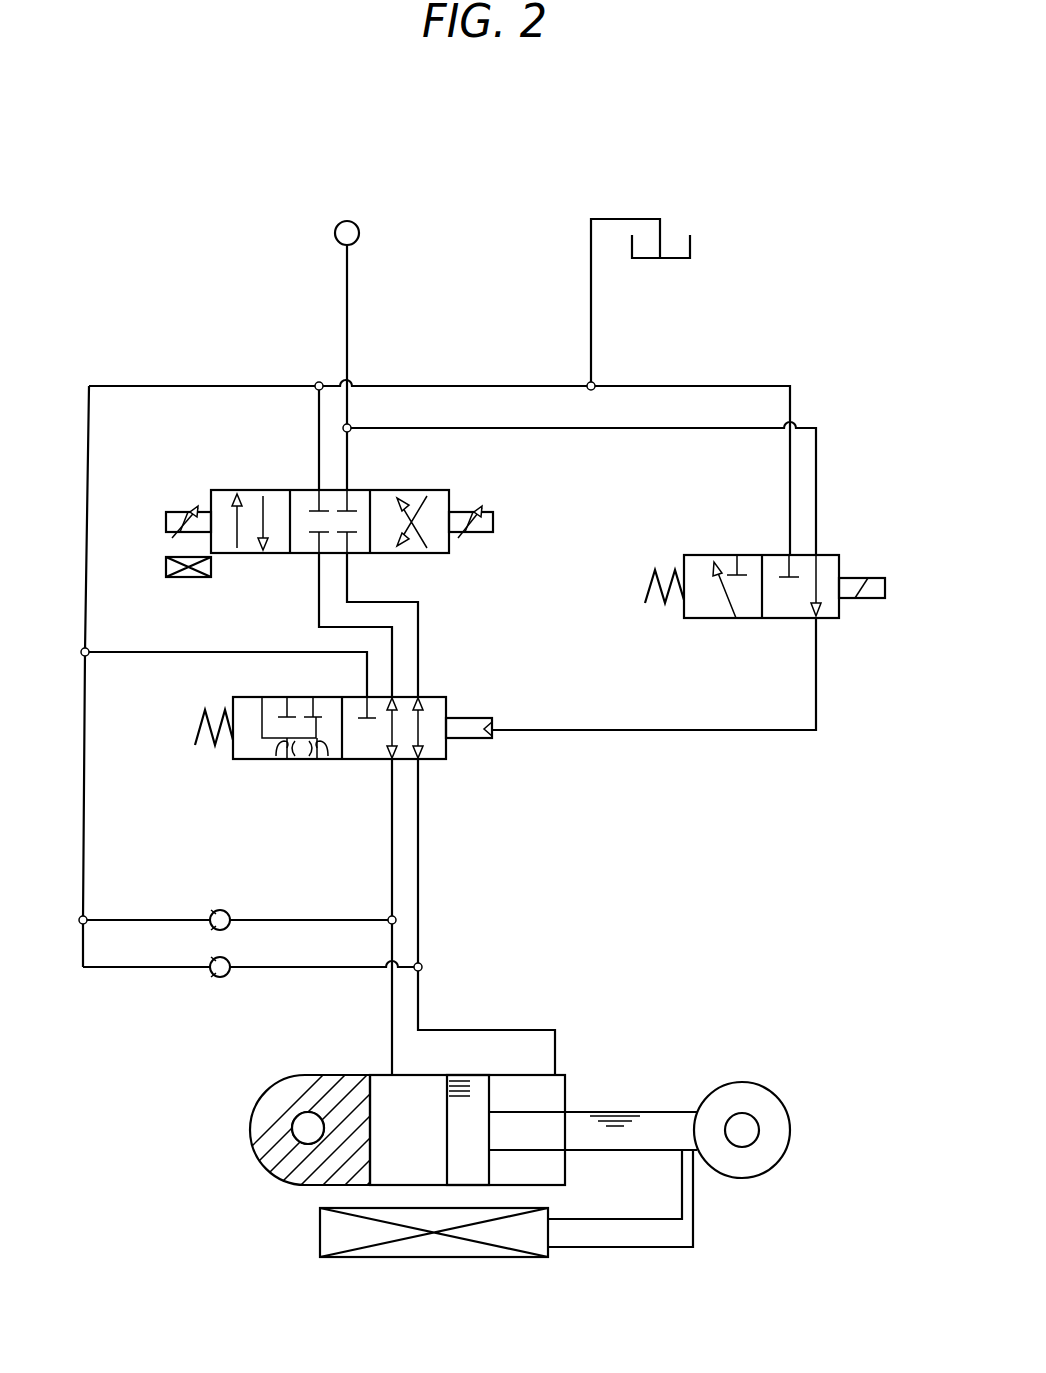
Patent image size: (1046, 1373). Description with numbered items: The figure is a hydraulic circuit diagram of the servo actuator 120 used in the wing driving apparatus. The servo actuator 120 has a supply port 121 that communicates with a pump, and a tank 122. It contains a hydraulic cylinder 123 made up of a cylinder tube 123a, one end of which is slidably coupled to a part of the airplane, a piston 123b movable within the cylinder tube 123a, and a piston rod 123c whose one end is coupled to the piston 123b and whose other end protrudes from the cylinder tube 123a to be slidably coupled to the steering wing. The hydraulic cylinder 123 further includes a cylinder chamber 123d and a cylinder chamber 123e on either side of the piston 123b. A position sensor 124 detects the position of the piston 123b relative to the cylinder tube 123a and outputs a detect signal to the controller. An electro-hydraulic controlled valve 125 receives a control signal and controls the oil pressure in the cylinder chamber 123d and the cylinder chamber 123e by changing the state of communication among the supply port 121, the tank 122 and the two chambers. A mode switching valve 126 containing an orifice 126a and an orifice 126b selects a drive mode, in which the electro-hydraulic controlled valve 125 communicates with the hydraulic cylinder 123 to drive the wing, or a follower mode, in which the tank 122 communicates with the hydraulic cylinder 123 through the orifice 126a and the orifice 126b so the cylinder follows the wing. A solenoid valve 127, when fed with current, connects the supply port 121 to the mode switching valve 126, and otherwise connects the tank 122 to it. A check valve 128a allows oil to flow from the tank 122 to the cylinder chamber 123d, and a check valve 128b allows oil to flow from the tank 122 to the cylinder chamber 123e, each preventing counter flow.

The servo actuator 120 is at (493, 230).
The supply port 121 is at (355, 222).
The tank 122 is at (690, 250).
The hydraulic cylinder 123 is at (468, 1146).
The cylinder tube 123a is at (270, 1128).
The piston 123b is at (472, 1084).
The piston rod 123c is at (656, 1120).
The cylinder chamber 123d is at (383, 1088).
The cylinder chamber 123e is at (555, 1170).
The position sensor 124 is at (425, 1250).
The electro-hydraulic controlled valve 125 is at (451, 572).
The mode switching valve 126 is at (368, 736).
The orifice 126a is at (278, 752).
The orifice 126b is at (325, 752).
The solenoid valve 127 is at (738, 534).
The check valve 128a is at (228, 912).
The check valve 128b is at (228, 975).